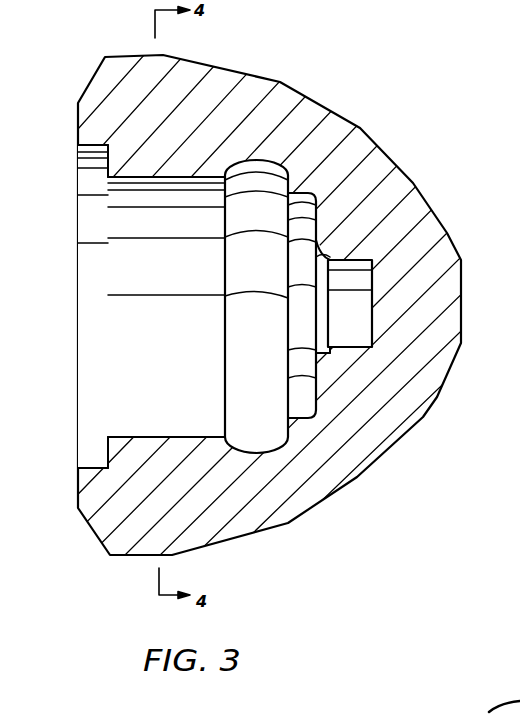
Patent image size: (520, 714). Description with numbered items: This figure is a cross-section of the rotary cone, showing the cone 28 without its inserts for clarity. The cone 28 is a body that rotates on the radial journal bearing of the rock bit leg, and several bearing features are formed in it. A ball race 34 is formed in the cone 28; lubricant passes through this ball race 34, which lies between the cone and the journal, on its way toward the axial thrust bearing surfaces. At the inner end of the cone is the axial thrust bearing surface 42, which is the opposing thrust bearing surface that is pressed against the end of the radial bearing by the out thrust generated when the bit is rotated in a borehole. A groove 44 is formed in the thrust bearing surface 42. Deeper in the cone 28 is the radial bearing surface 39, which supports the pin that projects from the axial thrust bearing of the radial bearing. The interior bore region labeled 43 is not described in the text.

The cone body 28 is at (385, 442).
The ball race 34 is at (255, 452).
The radial bearing surface 39 is at (350, 347).
The axial thrust bearing surface 42 is at (316, 350).
The bore 43 is at (180, 436).
The groove 44 is at (285, 238).